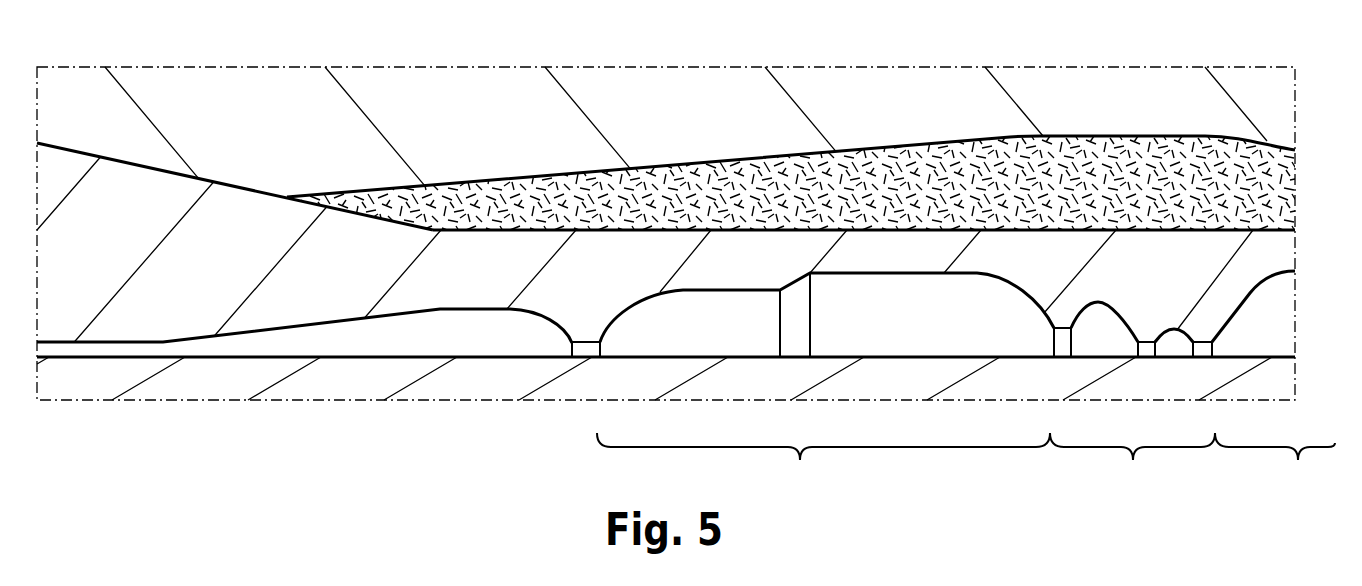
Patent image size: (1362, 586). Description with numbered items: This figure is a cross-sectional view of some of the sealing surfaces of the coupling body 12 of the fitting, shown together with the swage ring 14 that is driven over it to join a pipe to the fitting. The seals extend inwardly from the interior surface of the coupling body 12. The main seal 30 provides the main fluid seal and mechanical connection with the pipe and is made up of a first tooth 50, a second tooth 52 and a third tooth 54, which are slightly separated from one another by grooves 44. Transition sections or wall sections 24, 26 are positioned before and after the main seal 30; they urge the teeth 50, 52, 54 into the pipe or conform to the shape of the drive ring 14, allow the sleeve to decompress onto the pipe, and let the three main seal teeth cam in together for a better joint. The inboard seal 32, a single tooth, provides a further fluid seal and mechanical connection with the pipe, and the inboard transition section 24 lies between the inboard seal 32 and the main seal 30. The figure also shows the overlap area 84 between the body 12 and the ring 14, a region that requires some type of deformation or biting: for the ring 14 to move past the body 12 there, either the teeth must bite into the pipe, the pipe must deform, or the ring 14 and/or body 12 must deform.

The coupling body 12 is at (355, 285).
The swage ring 14 is at (952, 117).
The overlap area 84 is at (1203, 188).
The inboard transition section 24 is at (823, 461).
The main seal 30 is at (1132, 460).
The transition section 26 is at (1275, 460).
The inboard seal 32 is at (580, 343).
The groove 44 is at (1094, 302).
The first tooth 50 is at (1063, 330).
The second tooth 52 is at (1147, 344).
The third tooth 54 is at (1205, 343).